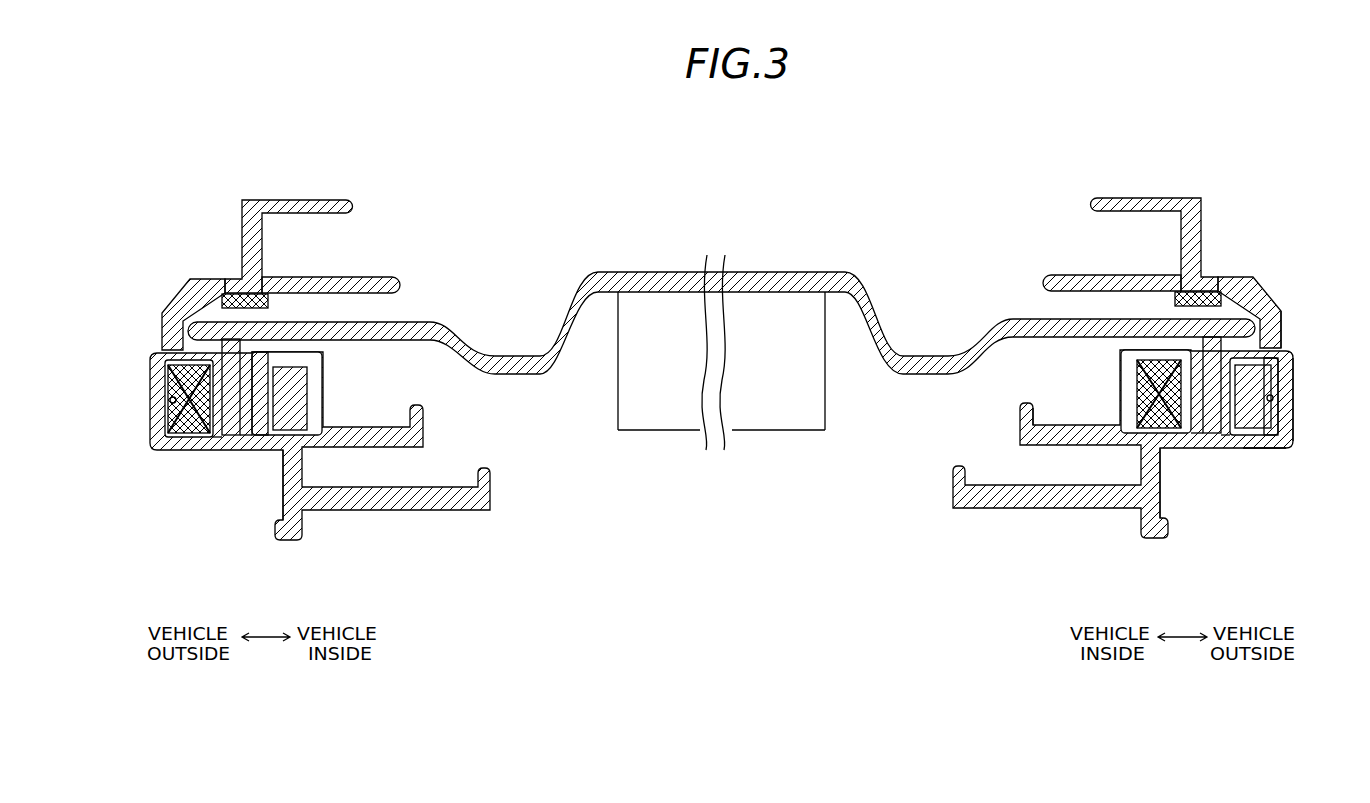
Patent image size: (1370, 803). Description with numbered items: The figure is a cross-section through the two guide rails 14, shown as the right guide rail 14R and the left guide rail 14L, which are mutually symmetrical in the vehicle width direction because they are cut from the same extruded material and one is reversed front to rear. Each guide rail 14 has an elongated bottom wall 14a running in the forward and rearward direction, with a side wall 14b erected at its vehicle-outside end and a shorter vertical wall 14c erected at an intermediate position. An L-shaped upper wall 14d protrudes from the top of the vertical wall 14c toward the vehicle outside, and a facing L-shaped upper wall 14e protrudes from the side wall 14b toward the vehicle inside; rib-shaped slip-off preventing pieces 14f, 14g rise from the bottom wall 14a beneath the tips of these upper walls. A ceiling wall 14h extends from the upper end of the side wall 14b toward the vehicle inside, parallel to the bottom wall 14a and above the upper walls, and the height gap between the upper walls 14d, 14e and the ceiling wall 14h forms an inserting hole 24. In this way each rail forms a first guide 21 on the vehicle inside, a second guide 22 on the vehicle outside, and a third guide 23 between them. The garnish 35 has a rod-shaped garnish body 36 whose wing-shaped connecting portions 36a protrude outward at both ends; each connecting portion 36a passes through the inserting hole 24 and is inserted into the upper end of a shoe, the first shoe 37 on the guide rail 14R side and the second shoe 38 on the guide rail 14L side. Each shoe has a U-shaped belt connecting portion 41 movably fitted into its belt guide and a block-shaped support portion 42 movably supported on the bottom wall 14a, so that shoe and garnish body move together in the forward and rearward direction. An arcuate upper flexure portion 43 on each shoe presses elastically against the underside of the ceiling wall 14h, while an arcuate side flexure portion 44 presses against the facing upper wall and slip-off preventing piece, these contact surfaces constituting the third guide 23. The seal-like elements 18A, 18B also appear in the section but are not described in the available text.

The guide rail 14 is at (718, 240).
The guide rail on the other side 14L is at (231, 264).
The guide rail on one side 14R is at (1214, 262).
The bottom wall 14a is at (278, 503).
The side wall 14b is at (1294, 395).
The vertical wall 14c is at (1120, 402).
The upper wall 14d is at (305, 350).
The upper wall 14e is at (1278, 340).
The slip-off preventing piece 14f is at (268, 440).
The slip-off preventing piece 14g is at (1252, 447).
The ceiling wall 14h is at (290, 279).
The inner seal 18A is at (323, 374).
The outer seal 18B is at (166, 393).
The first guide 21 is at (303, 452).
The second guide 22 is at (167, 450).
The third guide 23 is at (222, 452).
The inserting hole 24 is at (266, 311).
The garnish 35 is at (765, 261).
The garnish body 36 is at (788, 427).
The connecting portion 36a is at (628, 272).
The first shoe 37 is at (1274, 357).
The second shoe 38 is at (322, 415).
The belt connecting portion 41 is at (196, 452).
The support portion 42 is at (233, 452).
The upper flexure portion 43 is at (188, 303).
The side flexure portion 44 is at (300, 392).